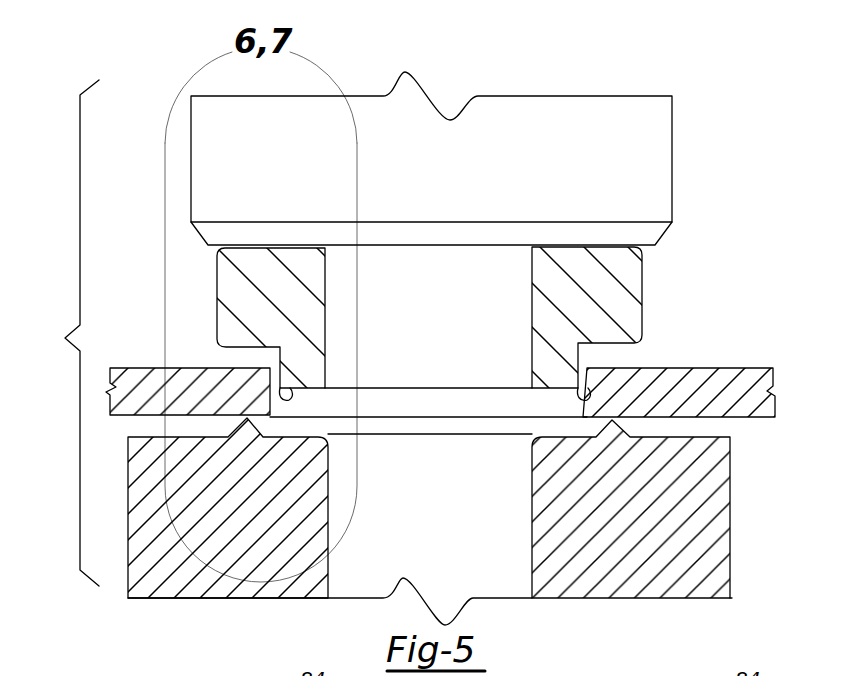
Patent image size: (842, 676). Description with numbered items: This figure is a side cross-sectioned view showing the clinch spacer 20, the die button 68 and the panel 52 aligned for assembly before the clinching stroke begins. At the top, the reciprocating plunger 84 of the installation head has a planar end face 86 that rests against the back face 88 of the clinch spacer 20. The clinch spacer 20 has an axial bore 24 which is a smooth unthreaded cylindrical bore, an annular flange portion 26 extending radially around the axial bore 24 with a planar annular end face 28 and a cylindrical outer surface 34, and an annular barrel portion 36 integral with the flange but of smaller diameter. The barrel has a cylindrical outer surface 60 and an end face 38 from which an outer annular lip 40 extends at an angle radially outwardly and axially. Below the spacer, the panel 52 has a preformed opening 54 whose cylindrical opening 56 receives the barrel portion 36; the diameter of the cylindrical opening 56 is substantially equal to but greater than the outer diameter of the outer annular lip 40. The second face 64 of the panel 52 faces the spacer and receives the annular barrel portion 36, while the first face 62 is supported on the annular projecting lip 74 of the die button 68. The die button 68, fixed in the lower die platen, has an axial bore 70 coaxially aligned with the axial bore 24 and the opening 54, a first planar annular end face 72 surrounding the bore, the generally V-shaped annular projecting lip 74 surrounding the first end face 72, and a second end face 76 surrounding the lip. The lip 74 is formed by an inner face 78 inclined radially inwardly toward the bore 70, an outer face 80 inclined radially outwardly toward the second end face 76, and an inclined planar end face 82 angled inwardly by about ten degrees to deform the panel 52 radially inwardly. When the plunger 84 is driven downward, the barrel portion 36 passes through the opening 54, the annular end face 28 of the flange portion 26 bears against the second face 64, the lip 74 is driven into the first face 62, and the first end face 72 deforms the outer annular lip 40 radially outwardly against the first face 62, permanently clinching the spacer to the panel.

The clinch spacer 20 is at (213, 292).
The axial bore 24 is at (326, 298).
The annular flange portion 26 is at (632, 282).
The annular end face 28 is at (246, 350).
The outer surface 34 is at (643, 298).
The annular barrel portion 36 is at (320, 368).
The end face 38 is at (400, 393).
The outer annular lip 40 is at (582, 405).
The panel 52 is at (152, 366).
The opening 54 is at (418, 407).
The cylindrical opening 56 is at (286, 376).
The outer surface 60 is at (578, 352).
The first face 62 is at (750, 418).
The second face 64 is at (745, 367).
The die button 68 is at (191, 586).
The axial bore 70 is at (332, 526).
The first planar annular end face 72 is at (475, 428).
The annular projecting lip 74 is at (619, 428).
The second end face 76 is at (160, 437).
The inner face 78 is at (575, 425).
The outer face 80 is at (238, 430).
The inclined planar end face 82 is at (600, 390).
The reciprocating plunger 84 is at (668, 157).
The planar end face 86 is at (430, 250).
The back face 88 is at (600, 245).